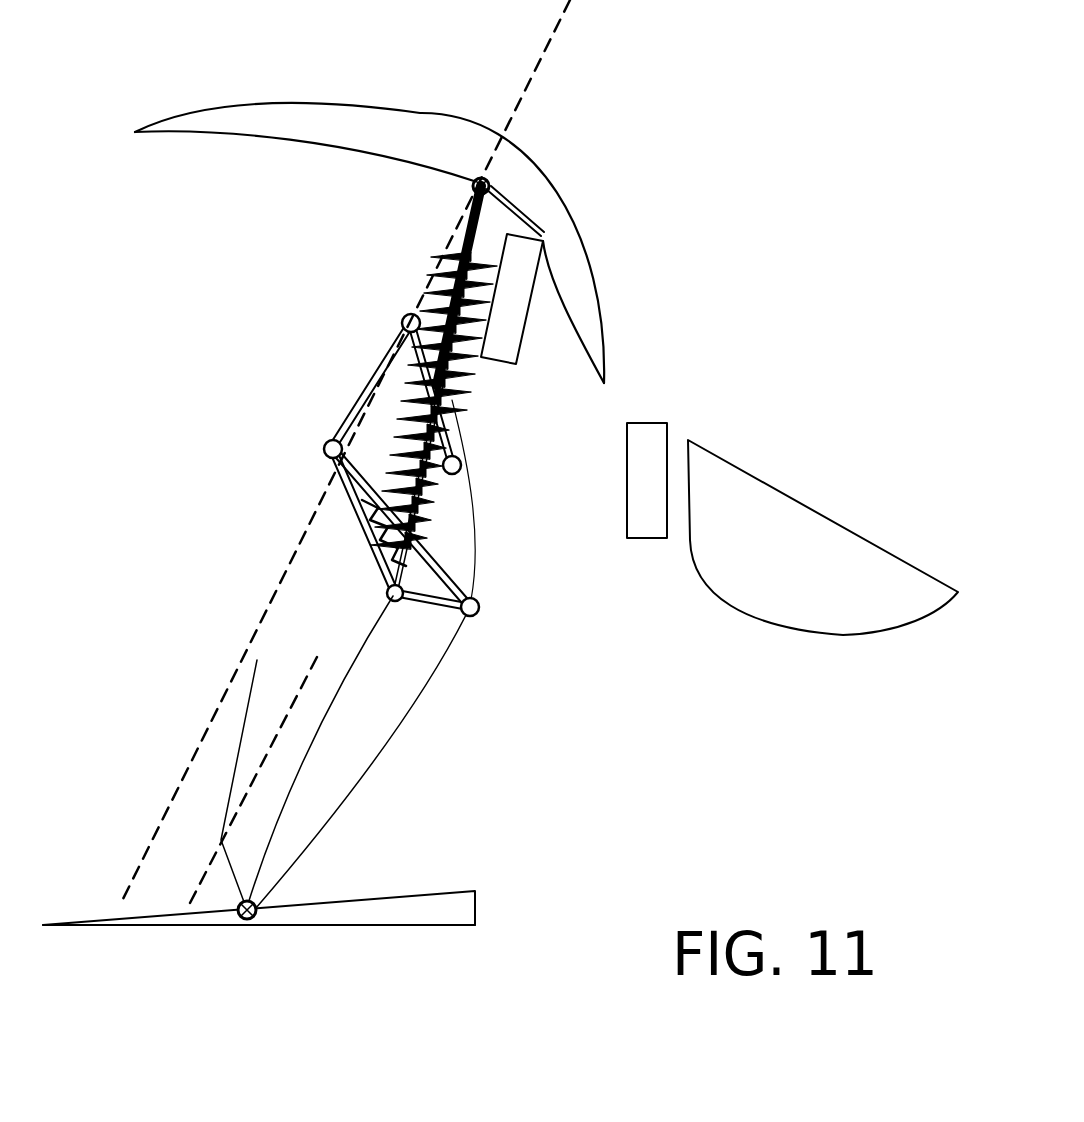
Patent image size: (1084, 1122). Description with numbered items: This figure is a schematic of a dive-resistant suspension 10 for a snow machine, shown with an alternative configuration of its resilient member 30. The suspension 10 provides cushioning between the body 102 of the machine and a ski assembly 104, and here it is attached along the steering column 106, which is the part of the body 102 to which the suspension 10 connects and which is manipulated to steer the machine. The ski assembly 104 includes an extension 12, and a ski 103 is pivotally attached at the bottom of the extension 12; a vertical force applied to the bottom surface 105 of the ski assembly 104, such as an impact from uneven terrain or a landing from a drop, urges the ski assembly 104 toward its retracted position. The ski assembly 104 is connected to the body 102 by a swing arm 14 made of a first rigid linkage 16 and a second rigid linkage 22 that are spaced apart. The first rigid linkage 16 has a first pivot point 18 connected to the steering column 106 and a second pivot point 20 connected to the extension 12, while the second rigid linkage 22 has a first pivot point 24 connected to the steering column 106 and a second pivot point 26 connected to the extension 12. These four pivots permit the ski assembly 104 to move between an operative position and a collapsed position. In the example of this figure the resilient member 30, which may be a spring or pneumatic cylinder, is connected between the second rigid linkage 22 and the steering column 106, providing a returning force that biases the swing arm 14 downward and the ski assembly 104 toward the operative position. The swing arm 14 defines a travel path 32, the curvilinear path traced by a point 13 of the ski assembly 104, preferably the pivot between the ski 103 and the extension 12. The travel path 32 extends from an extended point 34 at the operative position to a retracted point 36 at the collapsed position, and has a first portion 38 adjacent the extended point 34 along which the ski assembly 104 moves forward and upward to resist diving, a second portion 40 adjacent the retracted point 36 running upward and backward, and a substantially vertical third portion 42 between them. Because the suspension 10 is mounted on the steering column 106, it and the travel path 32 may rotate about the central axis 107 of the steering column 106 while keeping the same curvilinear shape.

The suspension 10 is at (312, 276).
The extension 12 is at (415, 678).
The point 13 is at (249, 920).
The swing arm 14 is at (410, 344).
The first rigid linkage 16 is at (447, 430).
The first pivot point 18 is at (411, 323).
The second pivot point 20 is at (452, 465).
The second rigid linkage 22 is at (430, 563).
The first pivot point 24 is at (333, 449).
The second pivot point 26 is at (470, 607).
The resilient member 30 is at (427, 508).
The travel path 32 is at (222, 830).
The extended point 34 is at (240, 910).
The retracted point 36 is at (253, 659).
The first portion 38 is at (192, 900).
The second portion 40 is at (238, 730).
The third portion 42 is at (223, 872).
The body 102 is at (575, 271).
The ski 103 is at (400, 912).
The ski assembly 104 is at (310, 820).
The bottom surface 105 is at (105, 927).
The steering column 106 is at (446, 236).
The central axis 107 is at (216, 703).